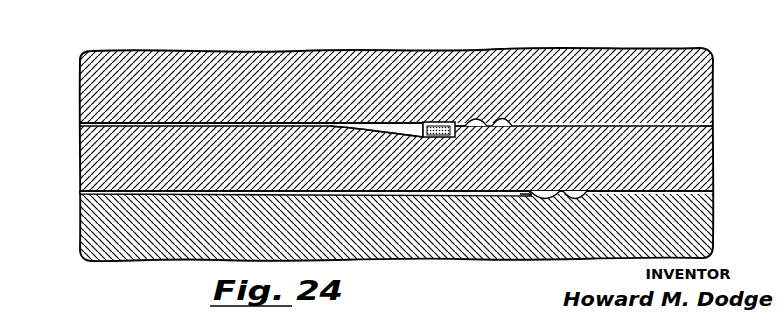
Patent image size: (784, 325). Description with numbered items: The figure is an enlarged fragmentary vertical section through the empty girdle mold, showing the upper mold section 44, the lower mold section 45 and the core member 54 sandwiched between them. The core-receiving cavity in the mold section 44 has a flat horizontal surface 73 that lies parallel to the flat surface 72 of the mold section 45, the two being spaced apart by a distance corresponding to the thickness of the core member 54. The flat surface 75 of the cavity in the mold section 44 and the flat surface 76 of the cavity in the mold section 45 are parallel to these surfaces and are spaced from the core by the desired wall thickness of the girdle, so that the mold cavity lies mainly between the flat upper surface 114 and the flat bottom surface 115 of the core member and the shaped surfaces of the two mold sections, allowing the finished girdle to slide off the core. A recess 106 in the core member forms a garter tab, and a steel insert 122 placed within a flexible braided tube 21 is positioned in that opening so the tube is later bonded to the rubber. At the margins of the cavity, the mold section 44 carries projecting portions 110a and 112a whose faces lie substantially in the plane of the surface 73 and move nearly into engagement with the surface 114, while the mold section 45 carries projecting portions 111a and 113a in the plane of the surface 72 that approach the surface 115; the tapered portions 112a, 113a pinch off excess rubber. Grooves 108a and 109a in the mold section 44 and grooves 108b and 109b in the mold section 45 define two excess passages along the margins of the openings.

The mold section 44 is at (398, 57).
The core member 54 is at (80, 155).
The mold section 45 is at (399, 262).
The flat surface of mold cavity 75 is at (95, 129).
The flat surface of mold cavity 76 is at (97, 190).
The flat horizontal surface 73 is at (713, 128).
The flat surface 72 is at (713, 191).
The flat upper surface 114 is at (245, 127).
The flat bottom surface 115 is at (195, 196).
The flexible braided tube 21 is at (423, 125).
The steel insert 122 is at (433, 138).
The recess 106 is at (382, 132).
The projecting portion 112a is at (463, 123).
The groove 108a is at (477, 120).
The projecting portion 110a is at (492, 118).
The groove 109a is at (510, 115).
The projecting portion 113a is at (528, 195).
The groove 108b is at (537, 198).
The projecting portion 111a is at (567, 200).
The groove 109b is at (583, 196).